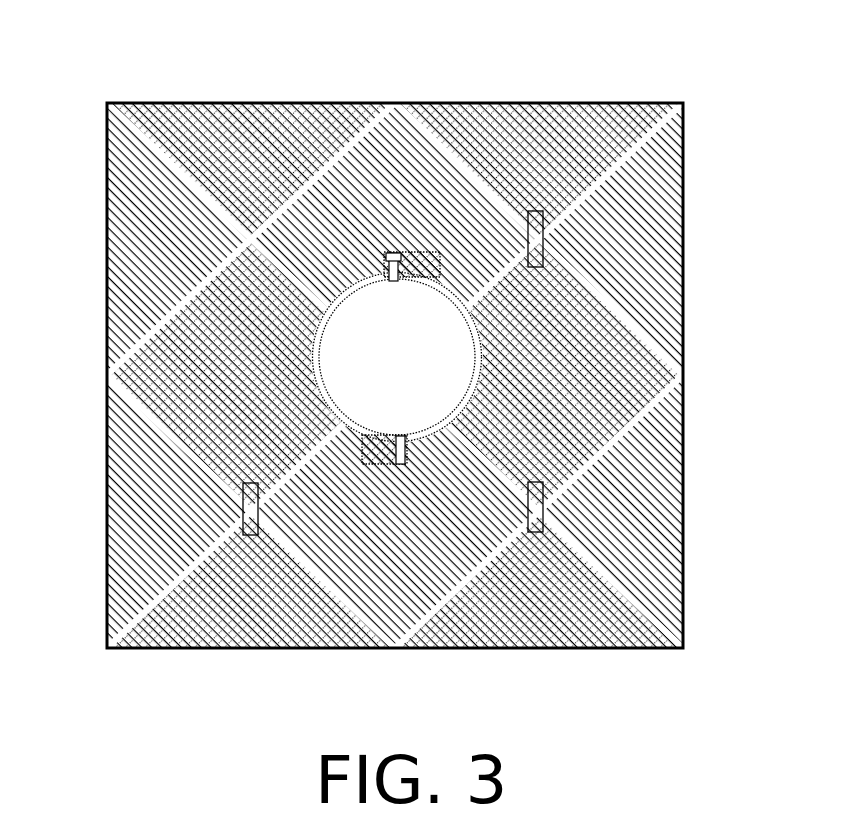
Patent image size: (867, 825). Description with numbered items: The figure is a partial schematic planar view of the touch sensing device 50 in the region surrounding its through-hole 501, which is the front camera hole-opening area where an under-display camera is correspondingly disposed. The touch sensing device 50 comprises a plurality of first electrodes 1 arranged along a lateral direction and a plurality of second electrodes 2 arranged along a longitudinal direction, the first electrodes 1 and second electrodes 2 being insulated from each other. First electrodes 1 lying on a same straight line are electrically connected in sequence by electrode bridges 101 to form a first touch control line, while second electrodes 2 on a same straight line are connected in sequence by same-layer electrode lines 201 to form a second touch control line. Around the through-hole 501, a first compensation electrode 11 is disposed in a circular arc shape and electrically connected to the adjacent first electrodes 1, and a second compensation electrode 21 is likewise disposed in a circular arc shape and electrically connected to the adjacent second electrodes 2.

The touch sensing device 50 is at (407, 359).
The through-hole 501 is at (383, 338).
The second compensation electrode 21 is at (440, 272).
The first compensation electrode 11 is at (479, 331).
The electrode bridge 101 is at (533, 252).
The electrode line 201 is at (547, 512).
The first electrode 1 is at (422, 527).
The second electrode 2 is at (557, 415).